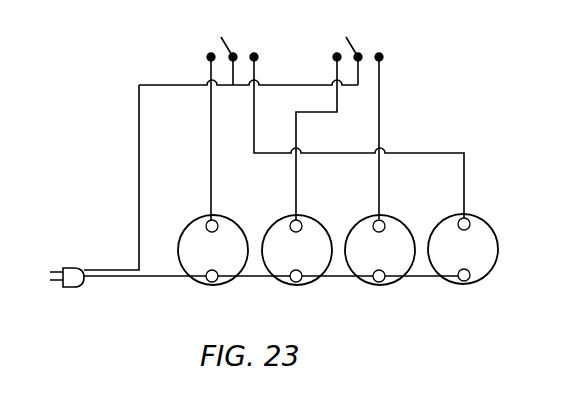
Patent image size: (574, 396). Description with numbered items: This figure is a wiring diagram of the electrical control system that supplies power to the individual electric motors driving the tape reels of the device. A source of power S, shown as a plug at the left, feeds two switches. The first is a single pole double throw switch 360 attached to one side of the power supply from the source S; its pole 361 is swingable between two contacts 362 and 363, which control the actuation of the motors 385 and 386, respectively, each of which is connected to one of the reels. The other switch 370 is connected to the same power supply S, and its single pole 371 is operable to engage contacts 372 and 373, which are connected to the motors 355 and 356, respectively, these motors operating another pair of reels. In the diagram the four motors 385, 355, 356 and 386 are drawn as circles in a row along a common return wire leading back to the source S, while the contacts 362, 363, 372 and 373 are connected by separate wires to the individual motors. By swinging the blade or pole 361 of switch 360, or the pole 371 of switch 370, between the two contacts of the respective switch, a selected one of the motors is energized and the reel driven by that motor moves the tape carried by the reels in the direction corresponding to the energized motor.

The single pole double throw switch 360 is at (231, 37).
The pole 361 is at (232, 28).
The contact 362 is at (207, 58).
The contact 363 is at (258, 58).
The switch 370 is at (366, 33).
The single pole 371 is at (362, 30).
The contact 372 is at (336, 53).
The contact 373 is at (383, 56).
The motor 385 is at (207, 282).
The motor 355 is at (300, 282).
The motor 356 is at (387, 282).
The motor 386 is at (471, 261).
The source of power S is at (73, 268).